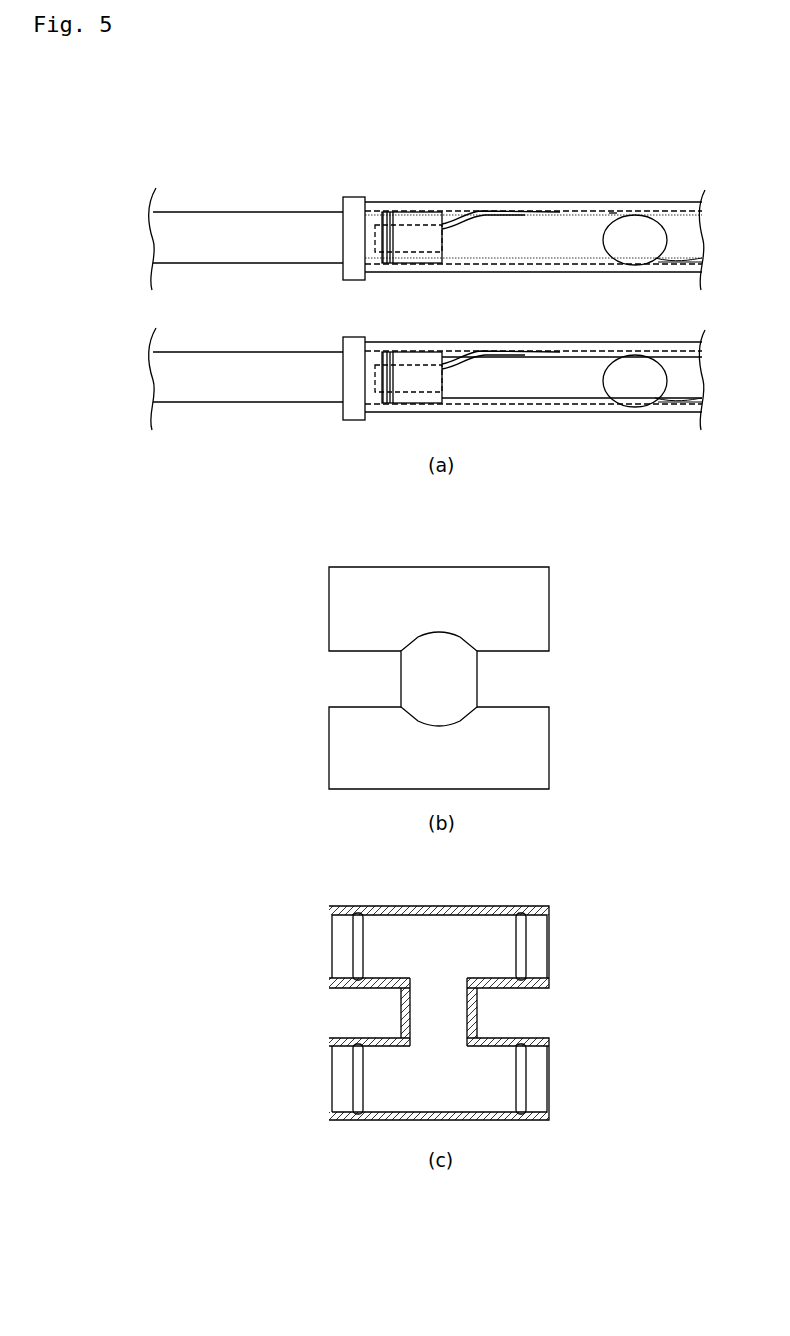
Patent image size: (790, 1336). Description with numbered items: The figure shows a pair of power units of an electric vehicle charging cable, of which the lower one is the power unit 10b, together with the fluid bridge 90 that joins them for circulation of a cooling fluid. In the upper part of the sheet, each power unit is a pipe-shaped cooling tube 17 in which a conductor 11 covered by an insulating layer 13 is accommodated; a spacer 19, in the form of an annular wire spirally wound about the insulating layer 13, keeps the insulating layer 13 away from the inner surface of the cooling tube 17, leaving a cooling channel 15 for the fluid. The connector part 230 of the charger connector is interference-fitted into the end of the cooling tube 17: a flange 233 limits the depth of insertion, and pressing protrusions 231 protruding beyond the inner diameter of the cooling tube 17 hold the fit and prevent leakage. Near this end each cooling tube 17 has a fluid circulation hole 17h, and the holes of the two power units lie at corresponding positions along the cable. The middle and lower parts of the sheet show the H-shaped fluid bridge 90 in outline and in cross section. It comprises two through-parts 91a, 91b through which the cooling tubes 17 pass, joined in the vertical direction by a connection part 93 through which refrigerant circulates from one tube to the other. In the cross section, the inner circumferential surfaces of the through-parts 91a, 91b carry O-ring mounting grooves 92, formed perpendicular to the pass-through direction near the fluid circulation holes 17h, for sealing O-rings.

The connector part 230 is at (280, 210).
The flange 233 is at (350, 196).
The pressing protrusion 231 is at (386, 211).
The conductor 11 is at (418, 225).
The spacer 19 is at (488, 210).
The insulating layer 13 is at (582, 228).
The cooling channel 15 is at (613, 212).
The cooling tube 17 is at (677, 204).
The fluid circulation hole 17h is at (612, 242).
The power unit 10b is at (640, 418).
The fluid bridge 90 is at (340, 550).
The through-part 91a is at (541, 604).
The through-part 91b is at (541, 759).
The connection part 93 is at (471, 679).
The O-ring mounting groove 92 is at (526, 1083).